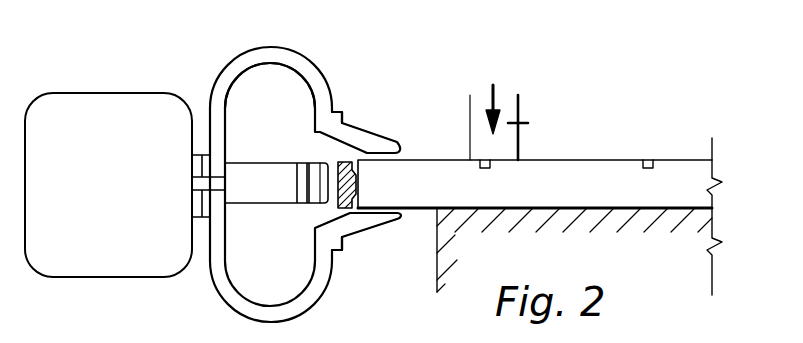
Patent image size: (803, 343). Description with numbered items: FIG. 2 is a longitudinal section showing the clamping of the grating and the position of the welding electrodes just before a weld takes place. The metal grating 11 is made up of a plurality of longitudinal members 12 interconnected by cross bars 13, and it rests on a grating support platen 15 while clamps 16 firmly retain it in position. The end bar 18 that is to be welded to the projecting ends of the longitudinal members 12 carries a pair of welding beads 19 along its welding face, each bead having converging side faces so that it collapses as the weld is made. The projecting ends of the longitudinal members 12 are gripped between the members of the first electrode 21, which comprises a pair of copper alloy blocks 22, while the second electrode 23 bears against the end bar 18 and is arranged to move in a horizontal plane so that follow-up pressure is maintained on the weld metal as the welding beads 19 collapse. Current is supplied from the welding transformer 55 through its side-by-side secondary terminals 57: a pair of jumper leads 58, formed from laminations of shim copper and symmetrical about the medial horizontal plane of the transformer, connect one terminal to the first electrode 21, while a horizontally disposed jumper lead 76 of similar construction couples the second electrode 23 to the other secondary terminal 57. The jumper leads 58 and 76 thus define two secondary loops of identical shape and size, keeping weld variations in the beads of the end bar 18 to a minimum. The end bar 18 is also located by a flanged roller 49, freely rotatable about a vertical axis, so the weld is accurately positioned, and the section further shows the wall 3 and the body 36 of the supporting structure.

The flanged roller 49 is at (112, 198).
The secondary terminal 57 is at (200, 155).
The jumper lead 58 is at (279, 44).
The welding transformer 55 is at (237, 69).
The jumper lead 76 is at (247, 173).
The second electrode 23 is at (317, 162).
The welding bead 19 is at (356, 189).
The end bar 18 is at (338, 198).
The first electrode 21 is at (359, 120).
The block 22 is at (392, 142).
The longitudinal member 12 is at (537, 174).
The pipe wall 3 is at (660, 199).
The cross bar 13 is at (482, 160).
The clamp 16 is at (519, 125).
The metal grating 11 is at (604, 147).
The wall 36 is at (636, 236).
The grating support platen 15 is at (450, 262).